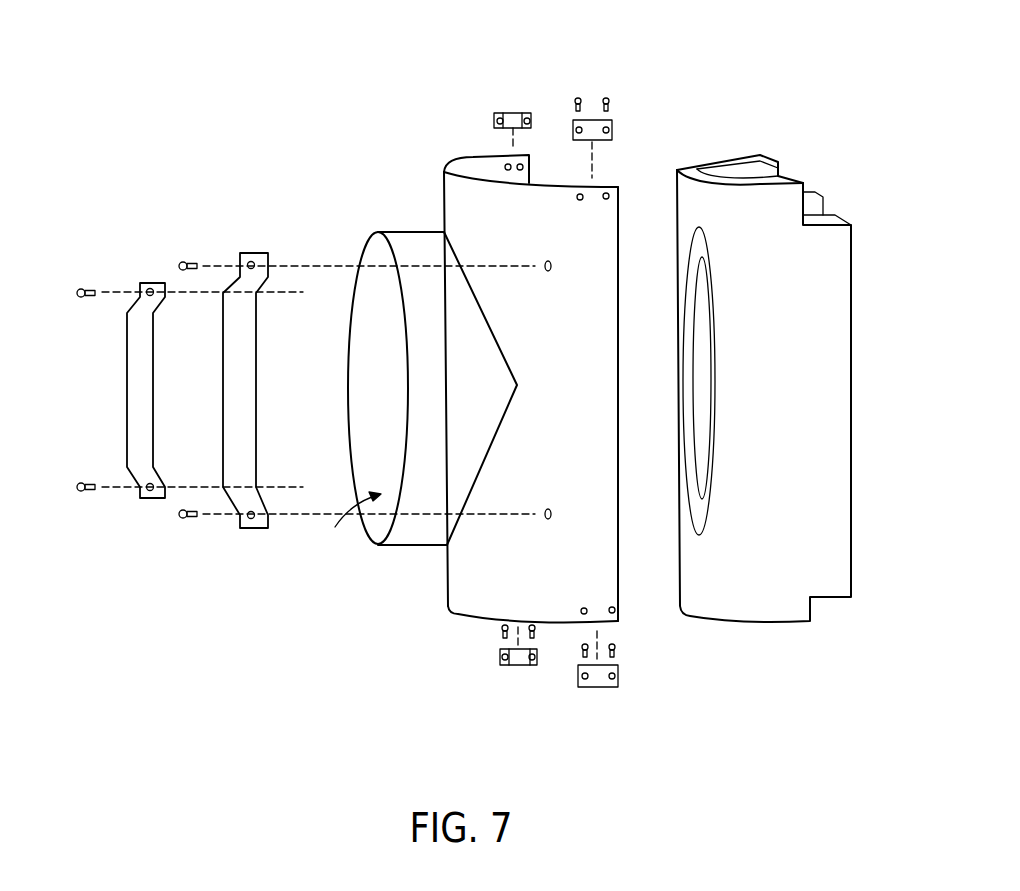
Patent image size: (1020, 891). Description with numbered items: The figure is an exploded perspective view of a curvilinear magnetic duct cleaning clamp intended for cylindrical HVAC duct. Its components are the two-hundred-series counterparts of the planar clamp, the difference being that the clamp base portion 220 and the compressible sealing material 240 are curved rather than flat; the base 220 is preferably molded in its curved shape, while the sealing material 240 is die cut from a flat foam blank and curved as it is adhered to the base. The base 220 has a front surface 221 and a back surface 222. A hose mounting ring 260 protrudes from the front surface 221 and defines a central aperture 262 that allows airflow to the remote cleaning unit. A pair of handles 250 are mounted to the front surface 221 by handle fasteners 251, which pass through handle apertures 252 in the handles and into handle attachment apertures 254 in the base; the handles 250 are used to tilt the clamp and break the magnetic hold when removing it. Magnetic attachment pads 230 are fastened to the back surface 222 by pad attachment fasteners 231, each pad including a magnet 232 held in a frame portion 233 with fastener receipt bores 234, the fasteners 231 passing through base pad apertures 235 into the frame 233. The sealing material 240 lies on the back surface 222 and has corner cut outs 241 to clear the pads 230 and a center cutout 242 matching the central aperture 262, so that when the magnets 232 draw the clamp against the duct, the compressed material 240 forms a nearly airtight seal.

The clamp base portion 220 is at (452, 210).
The front surface 221 is at (448, 578).
The back surface 222 is at (474, 161).
The magnetic attachment pad 230 is at (592, 120).
The pad attachment fastener 231 is at (578, 98).
The magnet 232 is at (512, 113).
The frame portion 233 is at (527, 113).
The fastener receipt bore 234 is at (494, 121).
The base pad aperture 235 is at (606, 199).
The compressible sealing material 240 is at (828, 338).
The corner cut out 241 is at (834, 208).
The center cutout 242 is at (700, 285).
The handle 250 is at (127, 400).
The handle fastener 251 is at (81, 289).
The handle aperture 252 is at (150, 288).
The handle attachment aperture 254 is at (548, 273).
The hose mounting ring 260 is at (378, 253).
The central aperture 262 is at (345, 524).